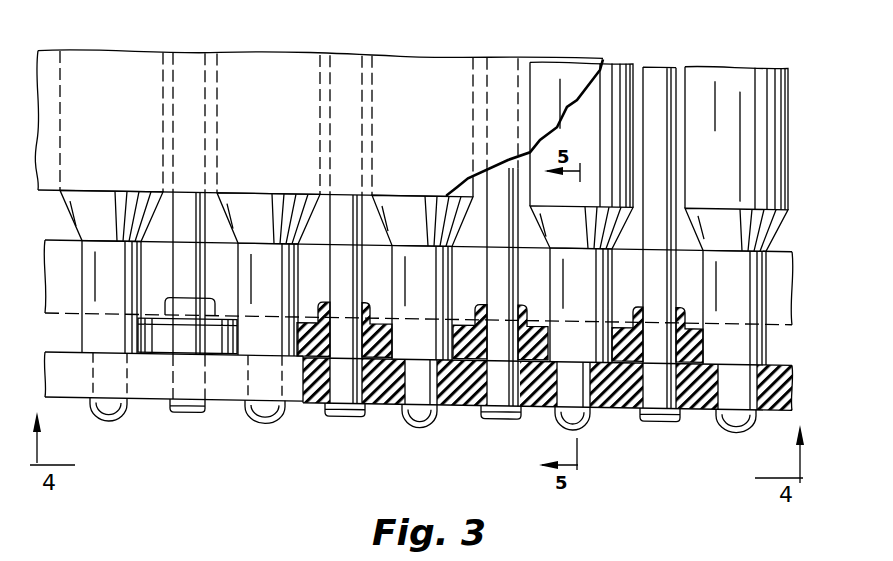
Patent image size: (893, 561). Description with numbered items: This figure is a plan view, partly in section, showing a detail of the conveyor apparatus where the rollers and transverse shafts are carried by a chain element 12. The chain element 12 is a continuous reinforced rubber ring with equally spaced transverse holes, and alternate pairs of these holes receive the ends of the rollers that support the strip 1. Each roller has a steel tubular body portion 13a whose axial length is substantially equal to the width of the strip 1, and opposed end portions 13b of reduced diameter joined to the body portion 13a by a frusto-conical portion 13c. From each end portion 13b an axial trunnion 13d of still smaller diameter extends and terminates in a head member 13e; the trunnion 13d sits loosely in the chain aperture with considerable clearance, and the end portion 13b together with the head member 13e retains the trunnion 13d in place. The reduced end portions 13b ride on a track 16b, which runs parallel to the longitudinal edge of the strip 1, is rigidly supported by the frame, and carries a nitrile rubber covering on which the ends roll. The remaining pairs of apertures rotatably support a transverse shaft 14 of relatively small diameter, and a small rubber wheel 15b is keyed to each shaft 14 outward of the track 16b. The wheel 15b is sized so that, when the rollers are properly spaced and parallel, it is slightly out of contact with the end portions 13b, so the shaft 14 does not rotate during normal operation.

The strip 1 is at (137, 64).
The chain element 12 is at (777, 404).
The tubular body portion 13a is at (710, 83).
The end portion 13b is at (743, 278).
The frusto-conical portion 13c is at (720, 228).
The axial trunnion 13d is at (727, 398).
The head member 13e is at (578, 416).
The transverse shaft 14 is at (497, 192).
The wheel 15b is at (160, 338).
The track 16b is at (620, 264).